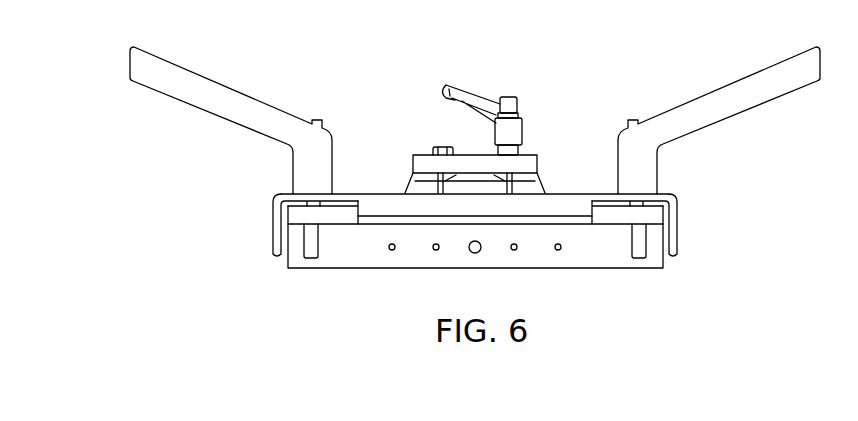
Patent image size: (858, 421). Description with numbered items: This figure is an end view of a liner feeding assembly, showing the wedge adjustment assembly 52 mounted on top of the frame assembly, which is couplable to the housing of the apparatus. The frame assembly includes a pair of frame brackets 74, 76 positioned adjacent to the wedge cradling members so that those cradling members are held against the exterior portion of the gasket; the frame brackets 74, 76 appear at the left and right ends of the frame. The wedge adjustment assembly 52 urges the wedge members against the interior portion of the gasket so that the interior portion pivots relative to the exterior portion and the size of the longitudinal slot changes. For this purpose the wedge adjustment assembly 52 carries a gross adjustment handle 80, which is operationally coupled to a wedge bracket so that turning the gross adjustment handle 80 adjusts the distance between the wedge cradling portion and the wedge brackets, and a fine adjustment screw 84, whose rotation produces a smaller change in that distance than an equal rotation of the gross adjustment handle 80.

The wedge adjustment assembly 52 is at (560, 95).
The frame bracket 74 is at (275, 207).
The frame bracket 76 is at (675, 196).
The gross adjustment handle 80 is at (477, 97).
The fine adjustment screw 84 is at (441, 146).